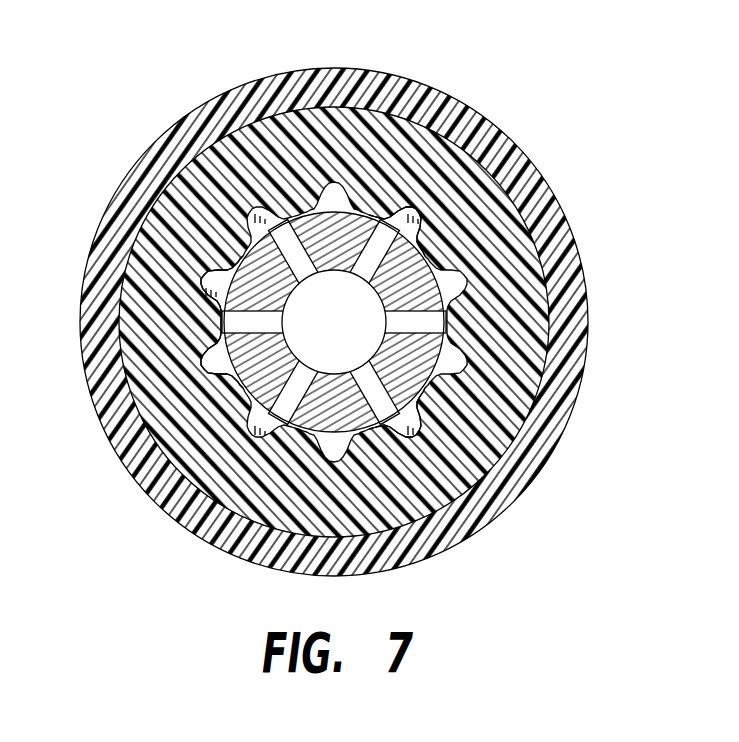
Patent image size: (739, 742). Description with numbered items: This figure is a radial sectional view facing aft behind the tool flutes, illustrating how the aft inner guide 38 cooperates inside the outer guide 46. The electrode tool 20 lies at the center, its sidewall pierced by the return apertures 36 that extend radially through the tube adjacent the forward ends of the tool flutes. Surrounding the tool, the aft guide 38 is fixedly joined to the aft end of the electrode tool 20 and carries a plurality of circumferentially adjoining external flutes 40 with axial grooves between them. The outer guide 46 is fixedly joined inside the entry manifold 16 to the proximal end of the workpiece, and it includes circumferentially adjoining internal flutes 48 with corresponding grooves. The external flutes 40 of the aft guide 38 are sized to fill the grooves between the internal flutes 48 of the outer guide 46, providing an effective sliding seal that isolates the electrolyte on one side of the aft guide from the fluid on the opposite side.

The entry manifold 16 is at (474, 108).
The outer guide 46 is at (367, 168).
The electrode tool 20 is at (470, 287).
The external flutes 40 is at (457, 367).
The return apertures 36 is at (196, 322).
The aft inner guide 38 is at (418, 191).
The internal flutes 48 is at (478, 404).